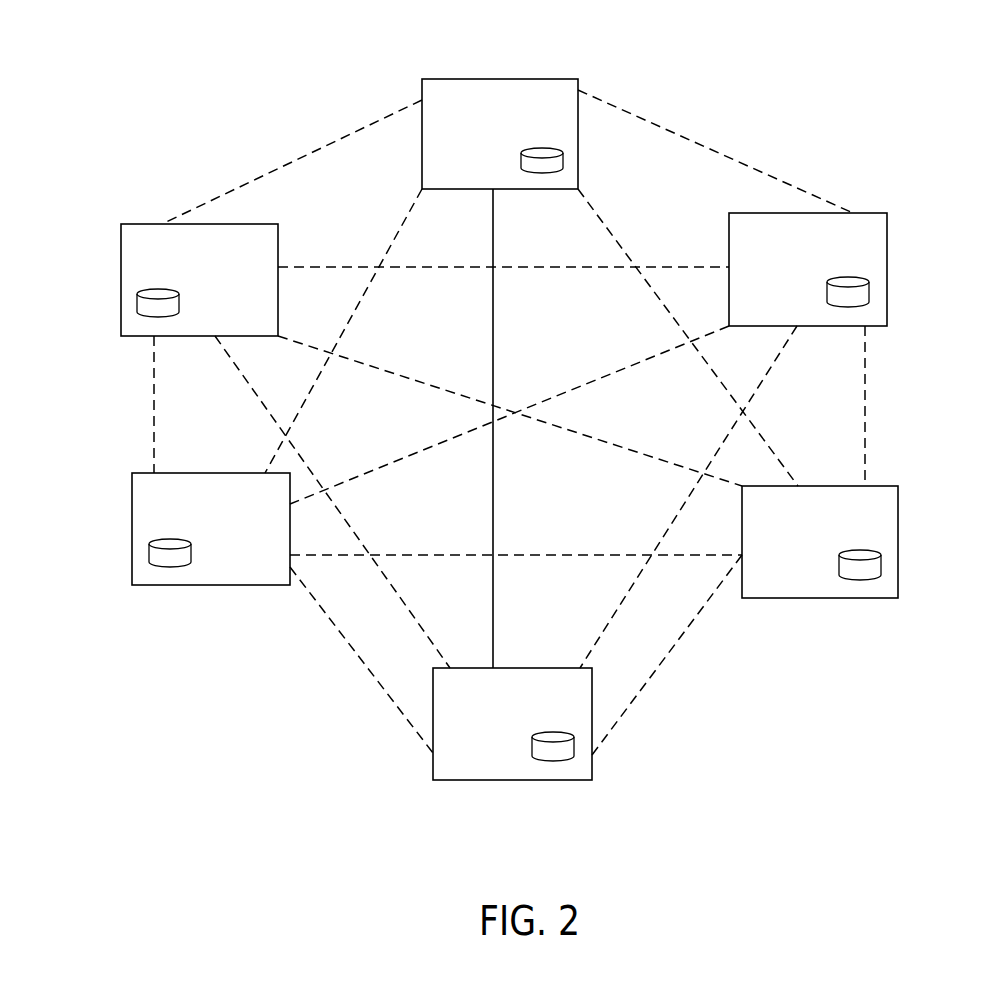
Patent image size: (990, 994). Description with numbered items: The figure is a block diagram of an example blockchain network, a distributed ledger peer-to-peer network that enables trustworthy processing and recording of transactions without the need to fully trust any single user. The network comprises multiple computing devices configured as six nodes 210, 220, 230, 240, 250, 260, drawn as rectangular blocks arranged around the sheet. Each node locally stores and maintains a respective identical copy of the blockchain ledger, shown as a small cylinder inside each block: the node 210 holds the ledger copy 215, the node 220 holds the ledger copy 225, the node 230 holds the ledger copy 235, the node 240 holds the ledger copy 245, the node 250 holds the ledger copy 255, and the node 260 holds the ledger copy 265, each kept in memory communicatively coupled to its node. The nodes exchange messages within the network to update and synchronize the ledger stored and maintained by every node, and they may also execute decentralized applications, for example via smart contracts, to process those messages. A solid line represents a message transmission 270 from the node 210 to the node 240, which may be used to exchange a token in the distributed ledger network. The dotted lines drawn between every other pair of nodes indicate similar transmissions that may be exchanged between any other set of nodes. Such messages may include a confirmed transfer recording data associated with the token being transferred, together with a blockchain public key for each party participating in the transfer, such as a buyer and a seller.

The node 210 is at (495, 78).
The identical copy of the blockchain ledger 215 is at (563, 166).
The node 220 is at (887, 242).
The identical copy of the blockchain ledger 225 is at (869, 297).
The node 230 is at (898, 513).
The identical copy of the blockchain ledger 235 is at (881, 567).
The node 240 is at (458, 780).
The identical copy of the blockchain ledger 245 is at (553, 761).
The node 250 is at (132, 532).
The identical copy of the blockchain ledger 255 is at (169, 567).
The node 260 is at (121, 243).
The identical copy of the blockchain ledger 265 is at (137, 306).
The message transmission 270 is at (493, 497).